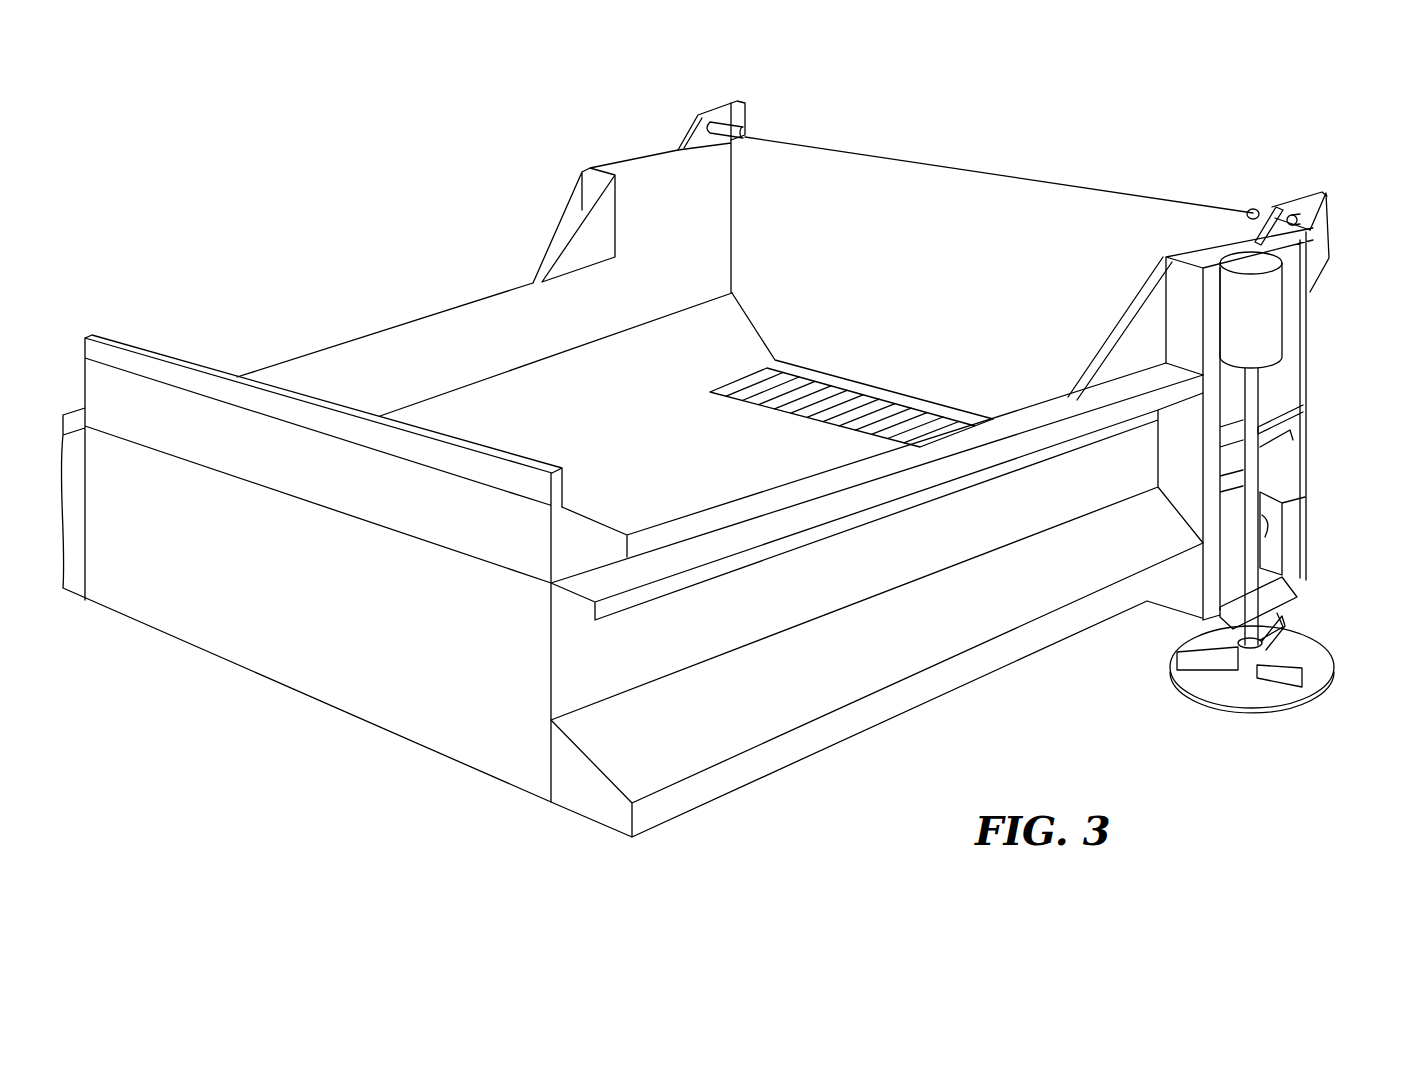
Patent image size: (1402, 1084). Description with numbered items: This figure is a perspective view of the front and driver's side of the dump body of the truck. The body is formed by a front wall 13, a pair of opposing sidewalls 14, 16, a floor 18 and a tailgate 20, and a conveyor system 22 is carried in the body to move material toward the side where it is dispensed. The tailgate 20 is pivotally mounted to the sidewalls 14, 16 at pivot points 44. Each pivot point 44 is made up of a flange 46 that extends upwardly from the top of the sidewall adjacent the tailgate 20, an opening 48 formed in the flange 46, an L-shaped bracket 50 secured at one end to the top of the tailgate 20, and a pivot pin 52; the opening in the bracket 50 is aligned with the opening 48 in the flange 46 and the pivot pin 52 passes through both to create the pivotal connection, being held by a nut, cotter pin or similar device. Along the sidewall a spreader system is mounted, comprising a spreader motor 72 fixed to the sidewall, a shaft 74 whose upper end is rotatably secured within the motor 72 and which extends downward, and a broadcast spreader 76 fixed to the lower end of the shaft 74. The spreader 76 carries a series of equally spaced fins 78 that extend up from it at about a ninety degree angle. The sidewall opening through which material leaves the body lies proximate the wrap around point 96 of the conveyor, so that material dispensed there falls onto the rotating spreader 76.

The front wall 13 is at (324, 609).
The sidewall 14 is at (899, 552).
The sidewall 16 is at (492, 342).
The floor 18 is at (642, 490).
The tailgate 20 is at (929, 289).
The conveyor system 22 is at (825, 412).
The pivot point 44 is at (777, 111).
The flange 46 is at (1287, 207).
The opening 48 is at (1298, 218).
The L-shaped bracket 50 is at (1312, 258).
The pivot pin 52 is at (722, 128).
The spreader motor 72 is at (1240, 329).
The shaft 74 is at (1252, 392).
The broadcast spreader 76 is at (1317, 672).
The fins 78 is at (1288, 620).
The wrap around point 96 is at (1268, 526).